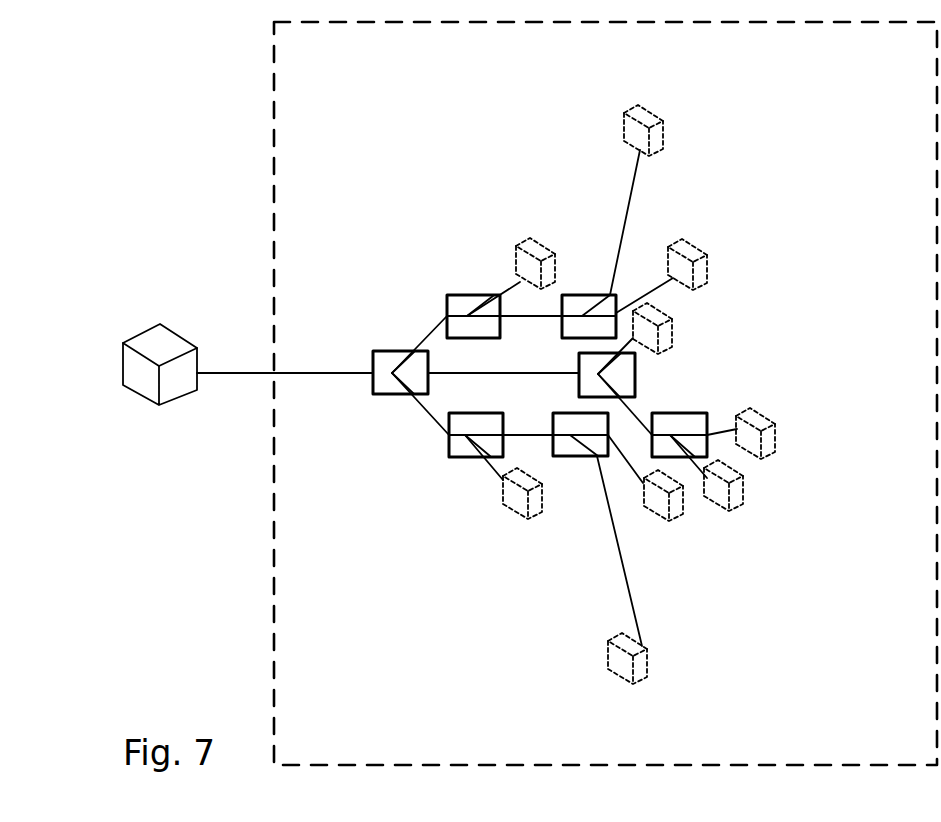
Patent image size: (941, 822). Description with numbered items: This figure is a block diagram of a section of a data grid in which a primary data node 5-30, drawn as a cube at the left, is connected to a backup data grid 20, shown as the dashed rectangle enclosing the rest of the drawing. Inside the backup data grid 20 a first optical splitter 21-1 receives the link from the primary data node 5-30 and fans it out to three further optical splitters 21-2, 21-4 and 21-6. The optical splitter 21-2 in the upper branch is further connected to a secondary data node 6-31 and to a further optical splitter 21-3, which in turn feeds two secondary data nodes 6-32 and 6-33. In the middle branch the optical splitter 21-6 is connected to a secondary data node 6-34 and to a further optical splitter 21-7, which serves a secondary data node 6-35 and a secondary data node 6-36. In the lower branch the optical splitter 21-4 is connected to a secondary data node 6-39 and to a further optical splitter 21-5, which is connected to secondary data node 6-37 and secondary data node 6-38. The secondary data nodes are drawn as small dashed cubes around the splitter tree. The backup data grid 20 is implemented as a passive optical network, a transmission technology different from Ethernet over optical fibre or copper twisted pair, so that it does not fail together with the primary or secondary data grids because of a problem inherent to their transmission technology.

The backup data grid 20 is at (272, 482).
The primary data node 5-30 is at (140, 333).
The first optical splitter 21-1 is at (400, 353).
The optical splitter 21-2 is at (475, 295).
The optical splitter 21-3 is at (590, 295).
The optical splitter 21-4 is at (475, 457).
The optical splitter 21-5 is at (580, 456).
The optical splitter 21-6 is at (636, 374).
The optical splitter 21-7 is at (697, 410).
The secondary data node 6-31 is at (548, 247).
The secondary data node 6-32 is at (665, 137).
The secondary data node 6-33 is at (697, 247).
The secondary data node 6-34 is at (673, 325).
The secondary data node 6-35 is at (777, 442).
The secondary data node 6-36 is at (737, 510).
The secondary data node 6-37 is at (663, 520).
The secondary data node 6-38 is at (648, 672).
The secondary data node 6-39 is at (513, 512).